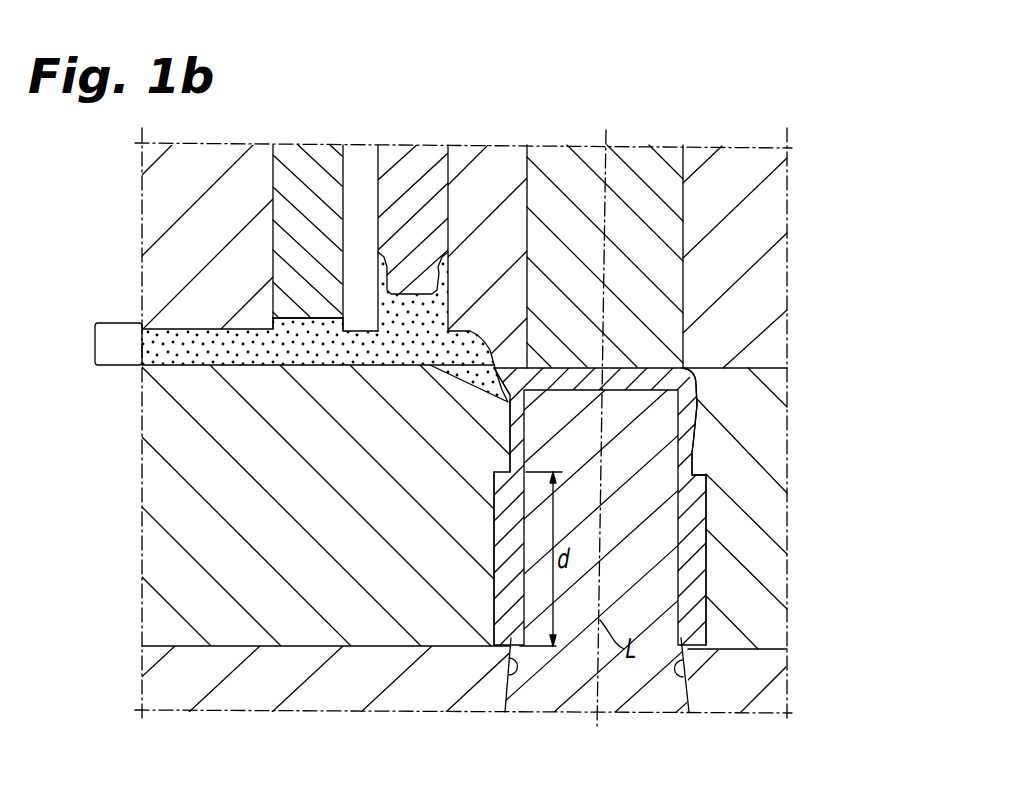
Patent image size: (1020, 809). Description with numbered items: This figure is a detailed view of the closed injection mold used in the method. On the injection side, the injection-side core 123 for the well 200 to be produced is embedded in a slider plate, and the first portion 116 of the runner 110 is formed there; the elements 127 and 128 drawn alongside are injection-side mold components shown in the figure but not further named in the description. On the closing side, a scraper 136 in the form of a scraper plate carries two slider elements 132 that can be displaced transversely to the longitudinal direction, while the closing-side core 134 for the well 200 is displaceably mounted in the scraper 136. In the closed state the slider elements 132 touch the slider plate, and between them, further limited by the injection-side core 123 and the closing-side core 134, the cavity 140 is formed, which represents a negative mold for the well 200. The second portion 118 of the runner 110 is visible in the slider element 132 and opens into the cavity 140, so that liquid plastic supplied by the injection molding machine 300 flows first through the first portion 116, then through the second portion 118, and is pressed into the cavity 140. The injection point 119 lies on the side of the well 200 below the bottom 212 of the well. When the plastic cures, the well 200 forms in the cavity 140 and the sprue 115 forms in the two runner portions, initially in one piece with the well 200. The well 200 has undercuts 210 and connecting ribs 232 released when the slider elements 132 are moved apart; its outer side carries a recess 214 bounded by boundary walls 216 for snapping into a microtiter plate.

The runner 110 is at (190, 367).
The sprue 115 is at (390, 367).
The first portion of the runner 116 is at (300, 367).
The second portion of the runner 118 is at (510, 460).
The injection point 119 is at (498, 372).
The injection-side core 123 is at (618, 172).
The pillar with tab 127 is at (418, 160).
The pillar 128 is at (278, 220).
The slider element 132 is at (102, 512).
The closing-side core 134 is at (615, 699).
The scraper 136 is at (758, 678).
The cavity 140 is at (707, 483).
The well 200 is at (664, 521).
The undercut 210 is at (494, 508).
The bottom of the well 212 is at (625, 367).
The recess 214 is at (695, 447).
The boundary wall of the recess 216 is at (510, 460).
The connecting rib 232 is at (494, 572).
The injection molding machine 300 is at (113, 330).